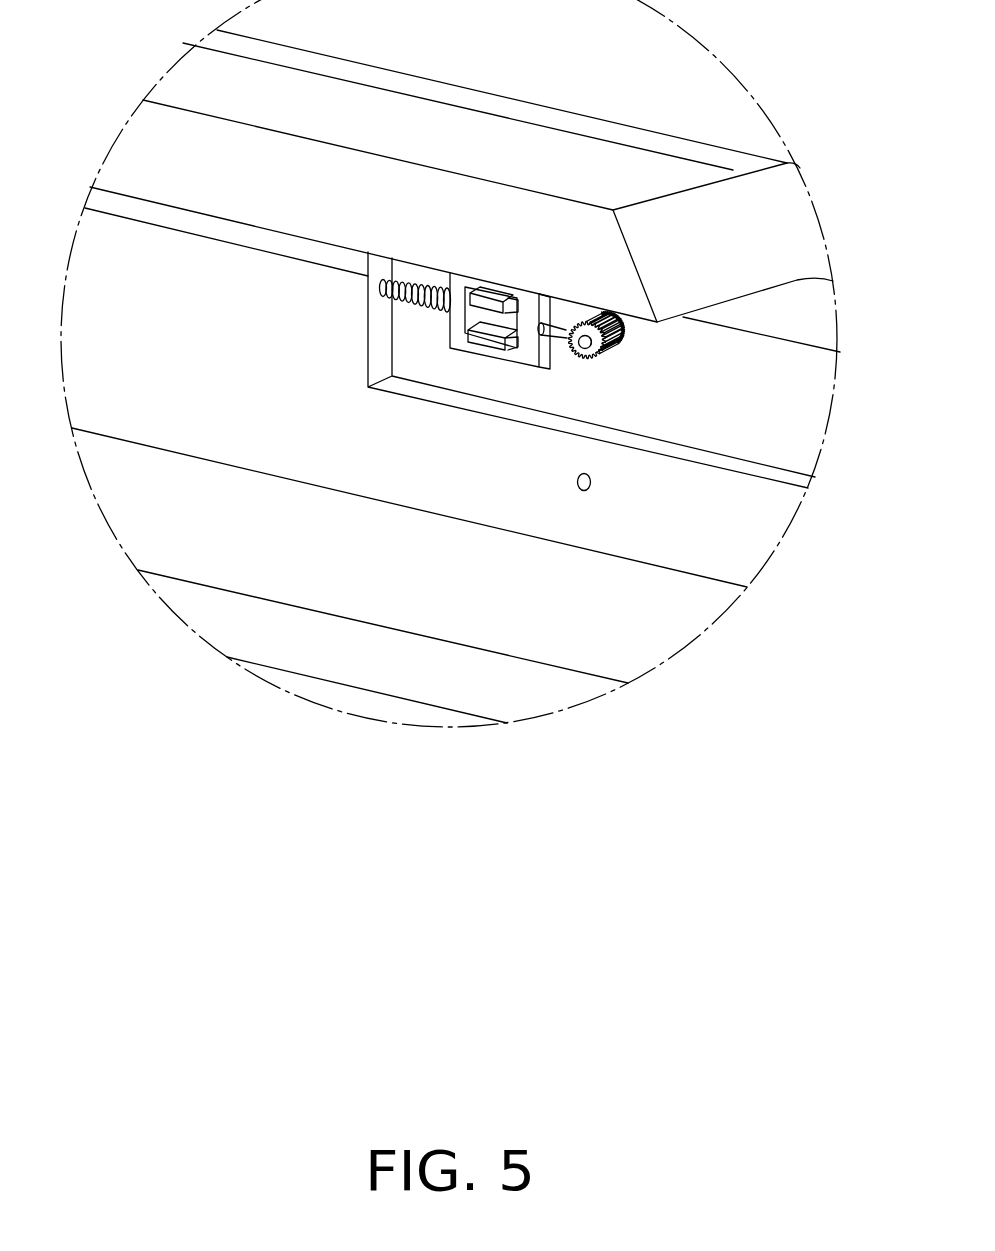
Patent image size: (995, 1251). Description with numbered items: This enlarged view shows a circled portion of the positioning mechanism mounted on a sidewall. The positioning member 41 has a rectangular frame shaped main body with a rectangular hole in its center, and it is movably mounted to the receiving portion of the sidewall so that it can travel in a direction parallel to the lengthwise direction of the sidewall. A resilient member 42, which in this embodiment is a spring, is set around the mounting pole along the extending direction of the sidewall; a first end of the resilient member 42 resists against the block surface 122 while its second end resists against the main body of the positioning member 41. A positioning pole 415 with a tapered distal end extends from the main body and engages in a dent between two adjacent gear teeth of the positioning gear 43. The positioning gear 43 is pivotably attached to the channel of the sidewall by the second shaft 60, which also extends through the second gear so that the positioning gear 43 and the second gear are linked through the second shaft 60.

The block surface 122 is at (377, 335).
The resilient member 42 is at (432, 308).
The positioning member 41 is at (525, 367).
The positioning pole 415 is at (565, 333).
The positioning gear 43 is at (626, 345).
The second shaft 60 is at (588, 352).